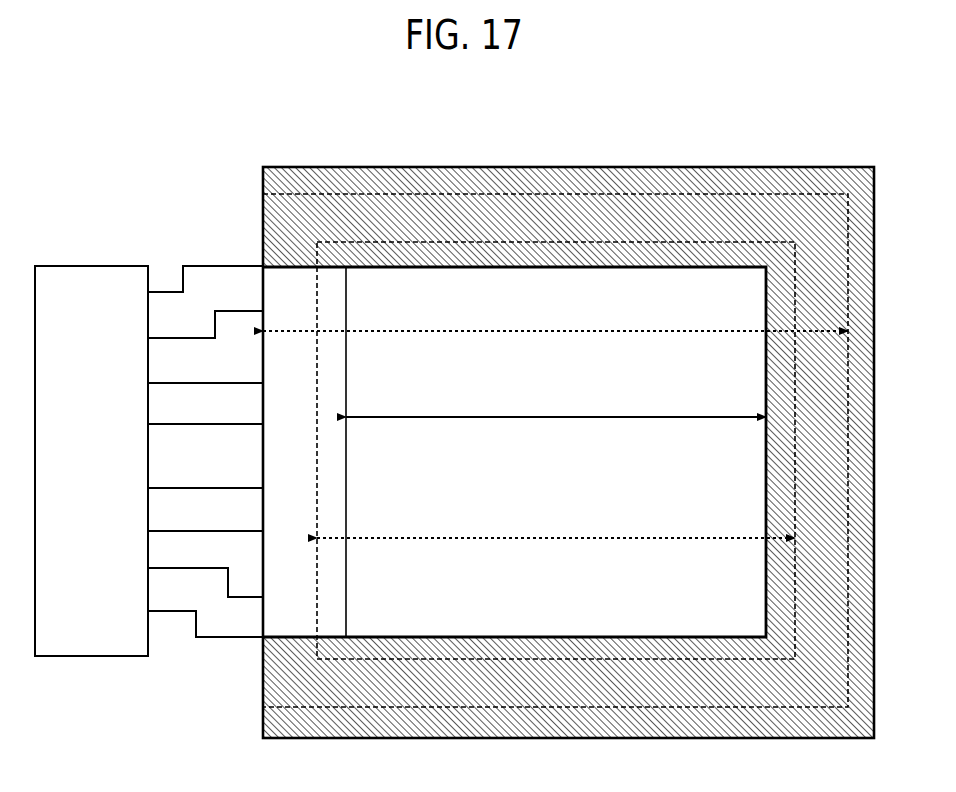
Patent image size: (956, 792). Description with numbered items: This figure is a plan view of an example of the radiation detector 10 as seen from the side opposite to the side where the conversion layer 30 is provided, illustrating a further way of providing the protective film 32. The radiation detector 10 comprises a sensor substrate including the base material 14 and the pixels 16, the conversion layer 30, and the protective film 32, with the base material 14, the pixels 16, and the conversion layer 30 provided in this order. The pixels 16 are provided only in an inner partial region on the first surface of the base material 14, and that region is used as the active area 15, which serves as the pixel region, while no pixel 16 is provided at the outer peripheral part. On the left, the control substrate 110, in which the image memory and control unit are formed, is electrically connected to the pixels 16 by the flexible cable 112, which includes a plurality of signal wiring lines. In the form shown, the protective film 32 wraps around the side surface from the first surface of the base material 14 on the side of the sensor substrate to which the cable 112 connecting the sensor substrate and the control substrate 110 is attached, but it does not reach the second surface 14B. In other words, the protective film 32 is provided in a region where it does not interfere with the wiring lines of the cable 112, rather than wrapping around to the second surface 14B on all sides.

The radiation detector 10 is at (908, 783).
The base material 14 is at (377, 331).
The second surface 14B is at (652, 297).
The active area 15 is at (457, 430).
The pixels 16 is at (408, 417).
The conversion layer 30 is at (428, 538).
The protective film 32 is at (865, 247).
The control substrate 110 is at (88, 266).
The flexible cable 112 is at (224, 292).